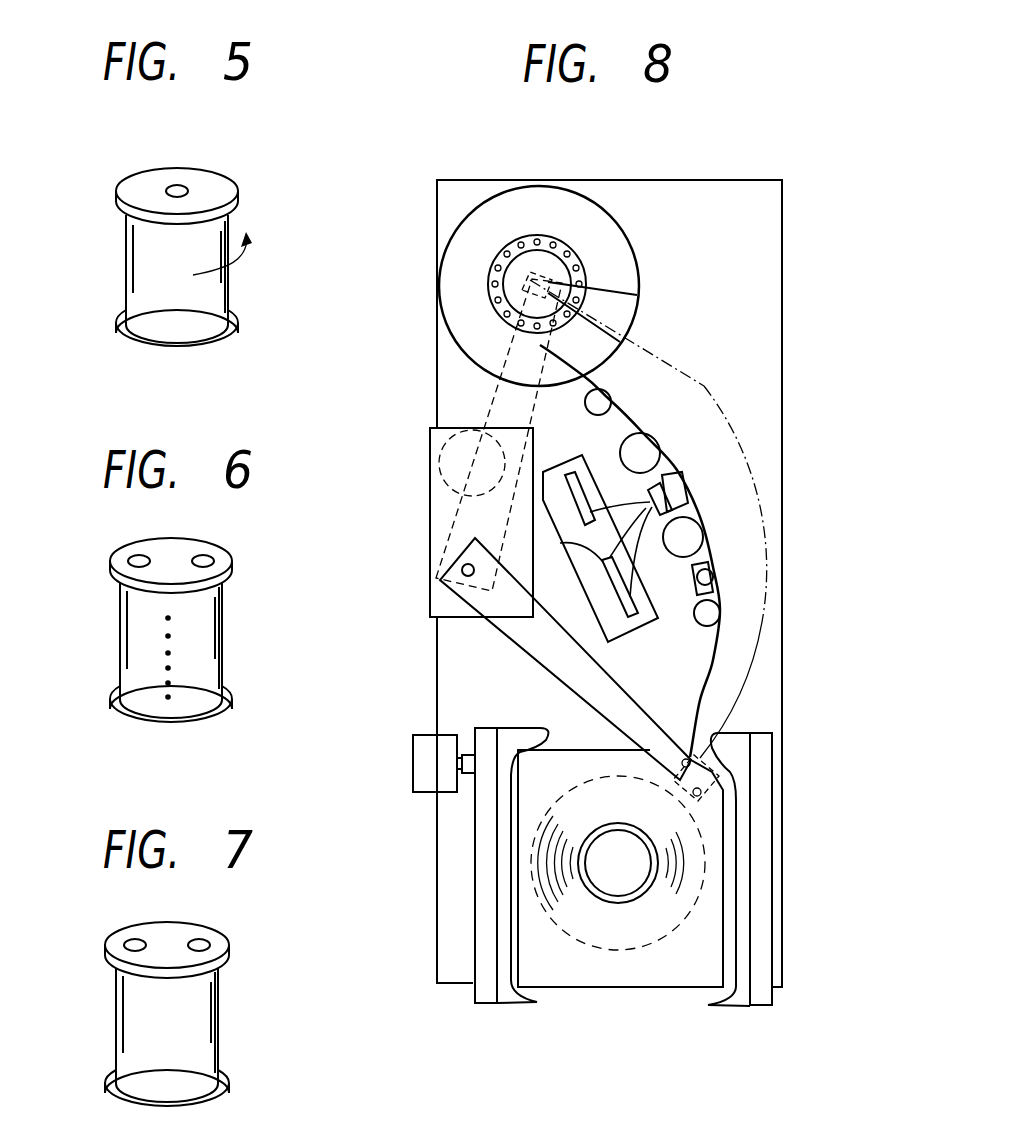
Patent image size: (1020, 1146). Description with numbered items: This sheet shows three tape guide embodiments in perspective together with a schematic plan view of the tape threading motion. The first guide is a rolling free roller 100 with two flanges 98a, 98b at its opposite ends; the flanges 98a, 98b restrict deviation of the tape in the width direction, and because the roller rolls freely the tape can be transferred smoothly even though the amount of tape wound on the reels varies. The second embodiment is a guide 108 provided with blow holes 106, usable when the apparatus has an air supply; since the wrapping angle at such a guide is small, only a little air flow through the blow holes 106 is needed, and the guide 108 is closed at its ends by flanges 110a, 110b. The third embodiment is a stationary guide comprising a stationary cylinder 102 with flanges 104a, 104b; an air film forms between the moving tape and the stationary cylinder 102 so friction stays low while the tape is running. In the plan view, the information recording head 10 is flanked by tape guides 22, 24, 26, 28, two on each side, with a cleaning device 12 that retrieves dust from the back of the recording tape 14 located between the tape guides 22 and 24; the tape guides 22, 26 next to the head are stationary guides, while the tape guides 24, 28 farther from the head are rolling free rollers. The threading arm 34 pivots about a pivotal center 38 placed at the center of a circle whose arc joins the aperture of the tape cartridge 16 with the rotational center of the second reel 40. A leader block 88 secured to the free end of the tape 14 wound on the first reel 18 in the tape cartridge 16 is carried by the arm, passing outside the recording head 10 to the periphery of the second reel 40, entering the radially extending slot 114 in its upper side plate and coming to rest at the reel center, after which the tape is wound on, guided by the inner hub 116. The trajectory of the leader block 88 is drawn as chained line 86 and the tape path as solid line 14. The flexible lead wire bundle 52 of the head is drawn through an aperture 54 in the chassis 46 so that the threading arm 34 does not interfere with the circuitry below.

In FIG. 5, the flange 98a is at (136, 184).
In FIG. 5, the flange 98b is at (125, 338).
In FIG. 5, the rolling free roller 100 is at (133, 267).
In FIG. 6, the upper flange 110a is at (118, 563).
In FIG. 6, the lower flange 110b is at (115, 704).
In FIG. 6, the guide 108 is at (125, 633).
In FIG. 6, the blow holes 106 is at (172, 653).
In FIG. 7, the flange 104a is at (110, 948).
In FIG. 7, the flange 104b is at (112, 1086).
In FIG. 7, the stationary cylinder 102 is at (118, 1008).
In FIG. 8, the information recording head 10 is at (678, 490).
In FIG. 8, the cleaning device 12 is at (707, 577).
In FIG. 8, the recording tape 14 is at (708, 683).
In FIG. 8, the tape cartridge 16 is at (568, 978).
In FIG. 8, the first reel 18 is at (637, 950).
In FIG. 8, the tape guide 22 is at (688, 540).
In FIG. 8, the tape guide 24 is at (710, 612).
In FIG. 8, the tape guide 26 is at (648, 452).
In FIG. 8, the tape guide 28 is at (610, 393).
In FIG. 8, the threading arm 34 is at (516, 626).
In FIG. 8, the pivotal center 38 is at (462, 570).
In FIG. 8, the second reel 40 is at (563, 197).
In FIG. 8, the chassis 46 is at (785, 260).
In FIG. 8, the flexible lead wire bundle 52 is at (560, 545).
In FIG. 8, the aperture 54 is at (648, 628).
In FIG. 8, the chained line 86 is at (750, 417).
In FIG. 8, the leader block 88 is at (723, 792).
In FIG. 8, the radially extending slot 114 is at (640, 308).
In FIG. 8, the inner hub 116 is at (576, 258).